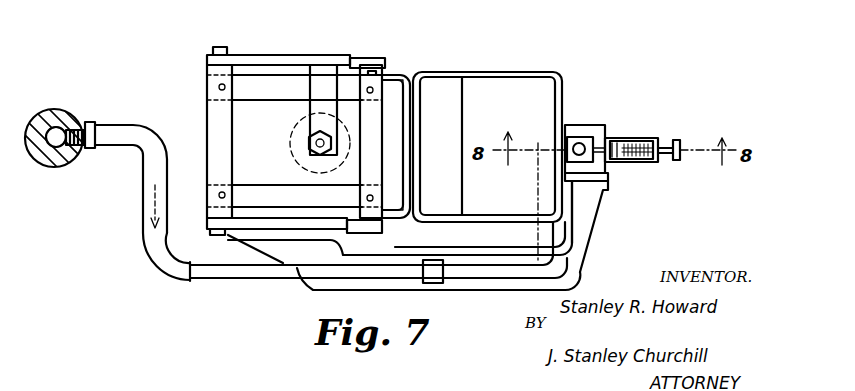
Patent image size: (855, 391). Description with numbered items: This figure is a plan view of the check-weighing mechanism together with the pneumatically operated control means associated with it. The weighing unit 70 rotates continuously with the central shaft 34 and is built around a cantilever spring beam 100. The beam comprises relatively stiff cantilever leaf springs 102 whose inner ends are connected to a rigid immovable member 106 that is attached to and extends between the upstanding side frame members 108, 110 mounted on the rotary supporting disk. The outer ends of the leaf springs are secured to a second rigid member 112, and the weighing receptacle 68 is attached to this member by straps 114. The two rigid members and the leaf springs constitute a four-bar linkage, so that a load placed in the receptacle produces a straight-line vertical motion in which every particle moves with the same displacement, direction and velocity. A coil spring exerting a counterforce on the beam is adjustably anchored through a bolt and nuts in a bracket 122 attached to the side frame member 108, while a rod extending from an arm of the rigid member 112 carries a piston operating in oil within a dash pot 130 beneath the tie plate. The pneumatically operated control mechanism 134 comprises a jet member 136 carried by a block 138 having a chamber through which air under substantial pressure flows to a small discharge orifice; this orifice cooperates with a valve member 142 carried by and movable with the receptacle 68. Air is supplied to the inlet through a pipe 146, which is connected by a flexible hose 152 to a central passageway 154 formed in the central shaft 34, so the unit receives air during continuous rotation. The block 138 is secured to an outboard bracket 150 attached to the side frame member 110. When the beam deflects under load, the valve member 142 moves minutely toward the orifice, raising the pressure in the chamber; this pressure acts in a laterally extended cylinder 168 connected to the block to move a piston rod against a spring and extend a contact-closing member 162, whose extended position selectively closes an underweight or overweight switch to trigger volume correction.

The central shaft 34 is at (53, 108).
The weighing receptacle 68 is at (497, 72).
The weighing unit 70 is at (649, 114).
The cantilever spring beam 100 is at (353, 160).
The upper cantilever leaf springs 102 is at (280, 85).
The rigid immovable member 106 is at (220, 142).
The side frame member 108 is at (265, 55).
The side frame member 110 is at (270, 223).
The second rigid member 112 is at (372, 148).
The straps 114 is at (395, 75).
The bracket 122 is at (313, 107).
The dash pot 130 is at (290, 153).
The pneumatically operated control mechanism 134 is at (653, 130).
The jet member 136 is at (585, 135).
The block 138 is at (595, 127).
The valve member 142 is at (575, 125).
The pipe 146 is at (217, 270).
The outboard bracket 150 is at (573, 257).
The flexible hose 152 is at (147, 238).
The central passageway 154 is at (56, 145).
The contact-closing member 162 is at (686, 160).
The cylinder 168 is at (636, 160).